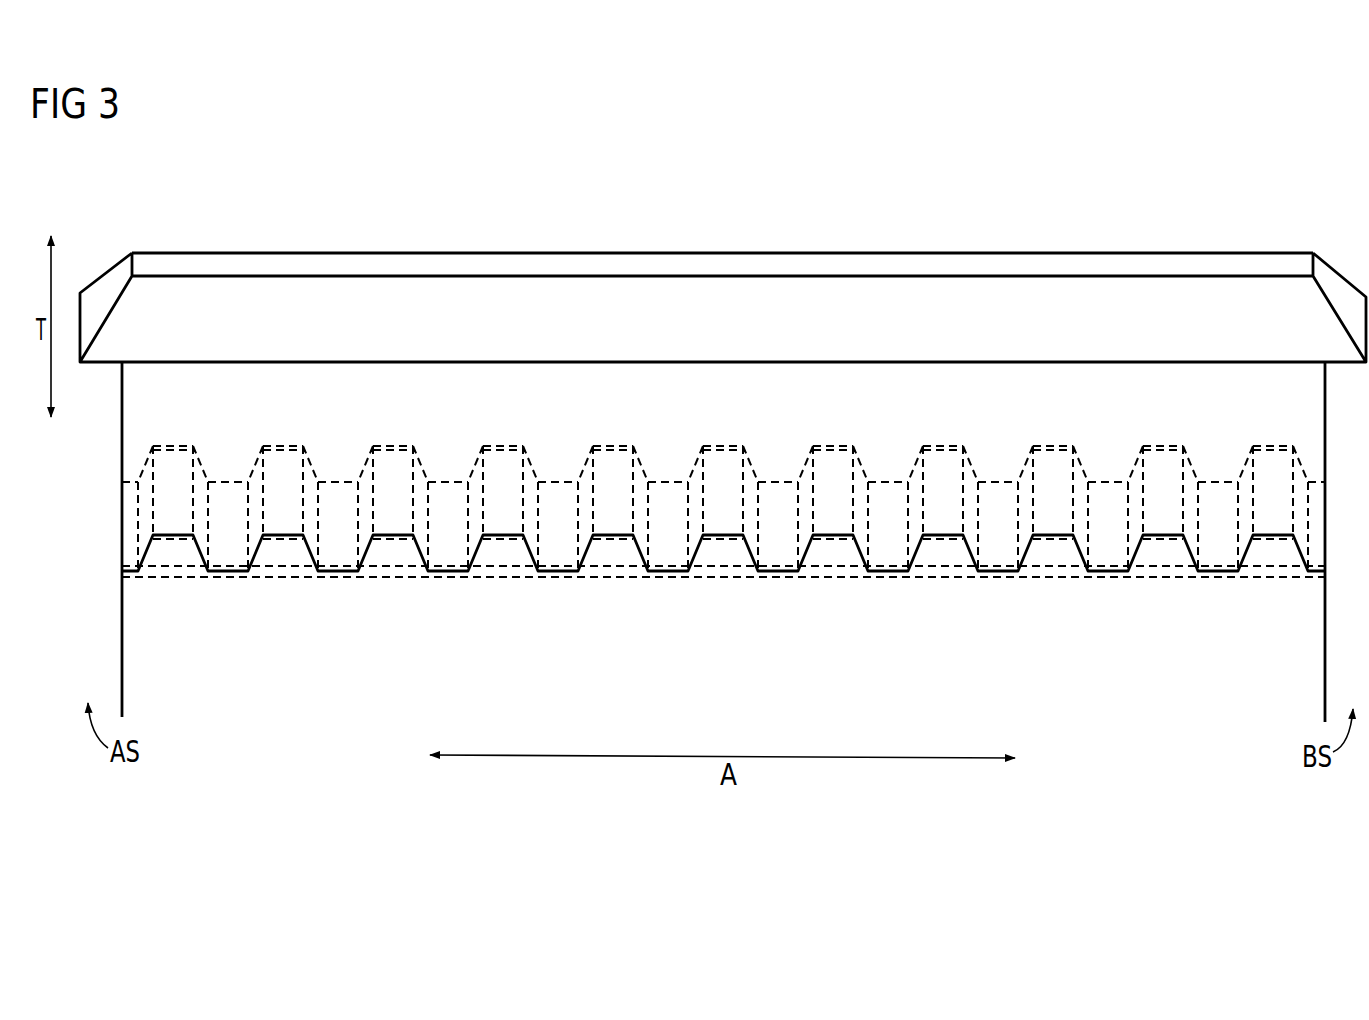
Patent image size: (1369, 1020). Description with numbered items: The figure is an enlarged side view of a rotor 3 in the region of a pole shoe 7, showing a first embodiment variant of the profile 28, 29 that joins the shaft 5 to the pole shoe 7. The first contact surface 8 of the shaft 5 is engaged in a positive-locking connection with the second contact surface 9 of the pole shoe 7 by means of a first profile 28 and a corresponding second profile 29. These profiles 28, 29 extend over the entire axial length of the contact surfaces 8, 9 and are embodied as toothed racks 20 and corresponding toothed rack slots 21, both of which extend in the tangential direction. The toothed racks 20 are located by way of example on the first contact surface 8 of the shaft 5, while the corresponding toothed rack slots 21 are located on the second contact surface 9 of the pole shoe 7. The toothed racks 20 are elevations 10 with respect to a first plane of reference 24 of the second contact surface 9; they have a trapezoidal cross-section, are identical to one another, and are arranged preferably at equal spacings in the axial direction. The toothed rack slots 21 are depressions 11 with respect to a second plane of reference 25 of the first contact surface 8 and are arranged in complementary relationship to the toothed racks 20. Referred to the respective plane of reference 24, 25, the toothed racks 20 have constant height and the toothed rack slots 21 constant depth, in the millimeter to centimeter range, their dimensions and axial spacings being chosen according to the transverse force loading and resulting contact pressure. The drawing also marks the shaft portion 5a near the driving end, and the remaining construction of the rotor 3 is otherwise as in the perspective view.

The rotor 3 is at (1276, 189).
The shaft 5 is at (1302, 679).
The base body side section 5a is at (143, 655).
The pole shoe 7 is at (1312, 402).
The first contact surface 8 is at (122, 580).
The second contact surface 9 is at (122, 548).
The elevations 10 is at (275, 557).
The toothed racks 20 is at (382, 557).
The depressions 11 is at (292, 562).
The toothed rack slots 21 is at (398, 559).
The first plane of reference 24 is at (1163, 580).
The second plane of reference 25 is at (1162, 574).
The first profile 28 is at (173, 543).
The second profile 29 is at (230, 555).